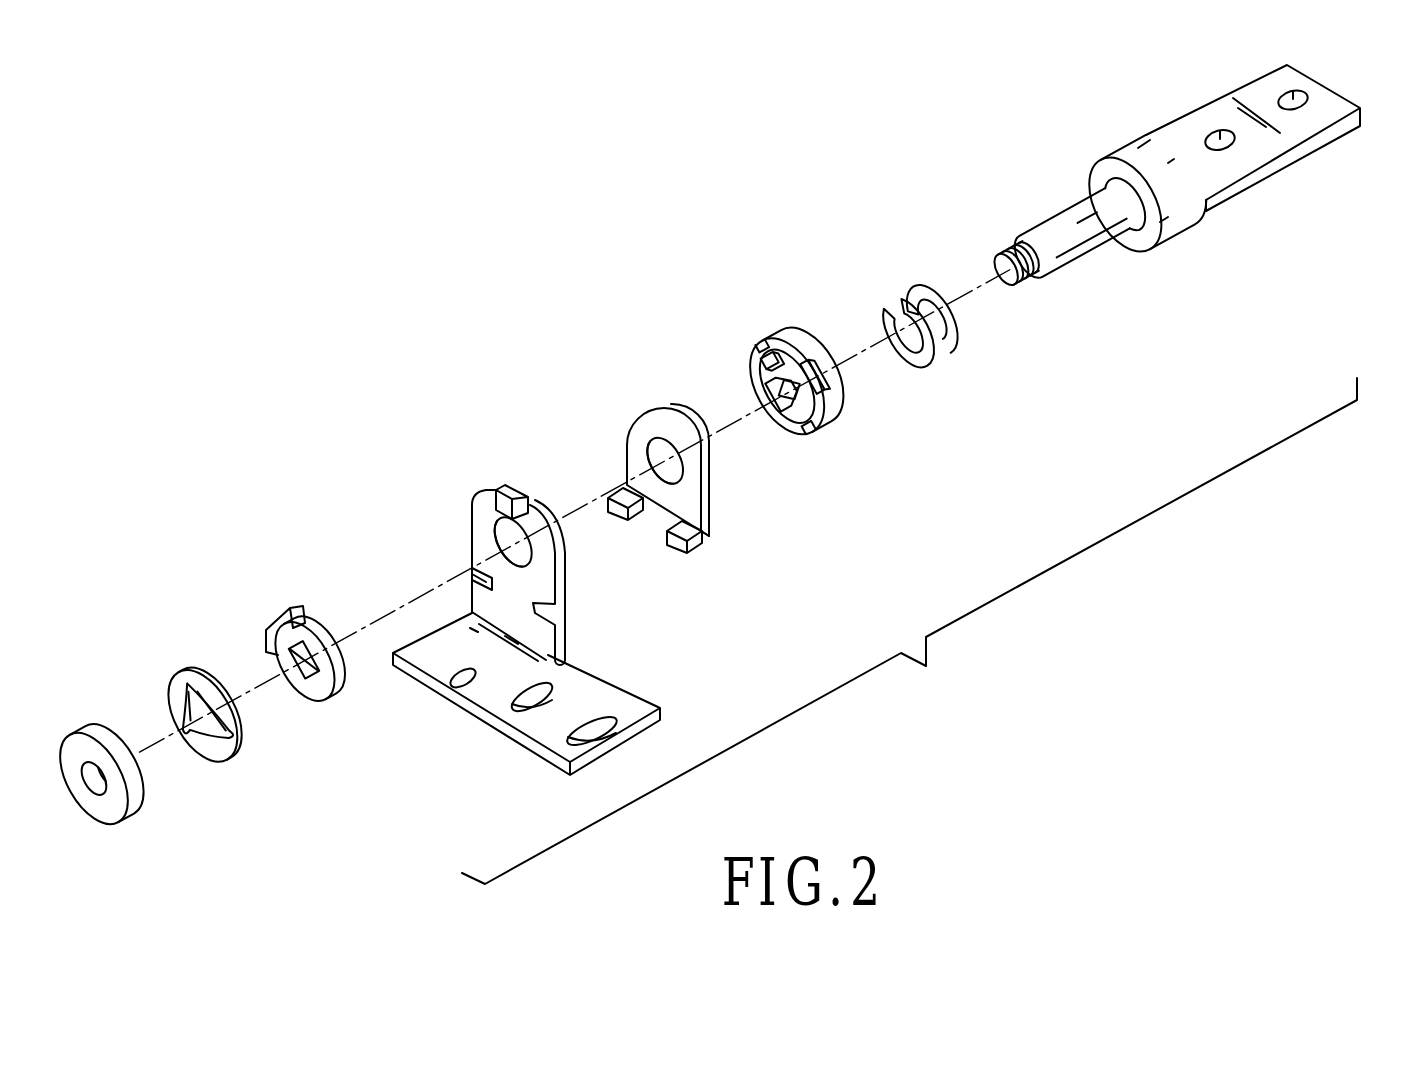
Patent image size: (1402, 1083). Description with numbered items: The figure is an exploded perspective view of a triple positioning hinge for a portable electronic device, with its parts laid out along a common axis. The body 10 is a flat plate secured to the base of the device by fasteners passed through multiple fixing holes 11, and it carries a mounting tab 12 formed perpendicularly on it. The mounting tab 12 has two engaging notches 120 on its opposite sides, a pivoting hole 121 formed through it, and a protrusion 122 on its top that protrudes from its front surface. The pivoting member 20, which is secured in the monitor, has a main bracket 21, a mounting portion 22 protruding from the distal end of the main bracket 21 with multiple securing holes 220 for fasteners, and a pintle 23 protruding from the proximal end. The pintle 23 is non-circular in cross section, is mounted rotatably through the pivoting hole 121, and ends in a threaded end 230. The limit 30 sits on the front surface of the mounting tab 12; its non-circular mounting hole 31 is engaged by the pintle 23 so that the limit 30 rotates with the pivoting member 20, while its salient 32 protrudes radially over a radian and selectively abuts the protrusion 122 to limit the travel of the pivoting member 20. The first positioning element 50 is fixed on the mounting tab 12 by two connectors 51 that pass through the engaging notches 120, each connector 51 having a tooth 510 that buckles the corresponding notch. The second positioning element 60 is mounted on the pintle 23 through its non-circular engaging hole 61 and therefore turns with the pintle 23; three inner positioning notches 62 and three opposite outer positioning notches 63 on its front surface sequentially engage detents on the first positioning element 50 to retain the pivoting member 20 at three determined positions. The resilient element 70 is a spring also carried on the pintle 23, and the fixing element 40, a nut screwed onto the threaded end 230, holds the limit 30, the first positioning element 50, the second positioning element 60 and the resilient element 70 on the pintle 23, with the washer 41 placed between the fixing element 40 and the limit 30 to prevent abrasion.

The body 10 is at (548, 623).
The fixing holes 11 is at (610, 723).
The mounting tab 12 is at (506, 568).
The engaging notches 120 is at (477, 577).
The pivoting hole 121 is at (503, 530).
The protrusion 122 is at (513, 498).
The pivoting member 20 is at (1160, 175).
The main bracket 21 is at (1182, 220).
The mounting portion 22 is at (1252, 132).
The securing holes 220 is at (1300, 95).
The pintle 23 is at (1045, 241).
The threaded end 230 is at (1010, 253).
The limit 30 is at (306, 657).
The mounting hole 31 is at (290, 660).
The salient 32 is at (277, 619).
The fixing element 40 is at (135, 807).
The washer 41 is at (173, 687).
The first positioning element 50 is at (668, 482).
The connectors 51 is at (695, 543).
The tooth 510 is at (670, 527).
The second positioning element 60 is at (789, 371).
The engaging hole 61 is at (770, 377).
The inner positioning notches 62 is at (775, 368).
The outer positioning notches 63 is at (823, 393).
The resilient element 70 is at (898, 293).